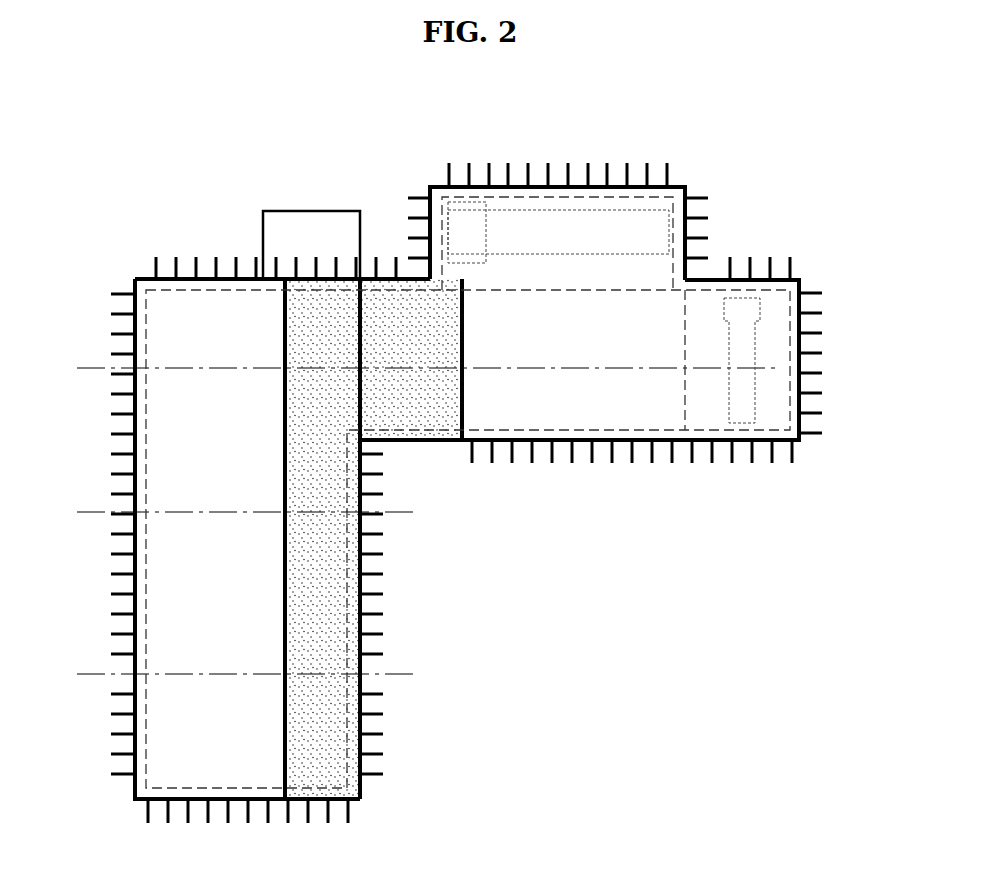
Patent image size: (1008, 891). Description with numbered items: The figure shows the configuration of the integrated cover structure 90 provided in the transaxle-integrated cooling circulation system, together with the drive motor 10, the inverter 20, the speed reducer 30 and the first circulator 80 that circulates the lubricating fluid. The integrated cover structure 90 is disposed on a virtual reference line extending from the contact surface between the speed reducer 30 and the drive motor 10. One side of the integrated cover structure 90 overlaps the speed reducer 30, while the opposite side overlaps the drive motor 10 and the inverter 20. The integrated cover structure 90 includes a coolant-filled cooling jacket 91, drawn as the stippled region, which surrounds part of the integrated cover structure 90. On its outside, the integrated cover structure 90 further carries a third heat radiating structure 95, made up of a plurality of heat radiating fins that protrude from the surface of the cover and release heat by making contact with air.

The drive motor 10 is at (625, 430).
The inverter 20 is at (542, 218).
The speed reducer 30 is at (146, 743).
The first circulator 80 is at (331, 211).
The integrated cover structure 90 is at (191, 300).
The cooling jacket 91 is at (322, 592).
The third heat radiating structure 95 is at (110, 453).